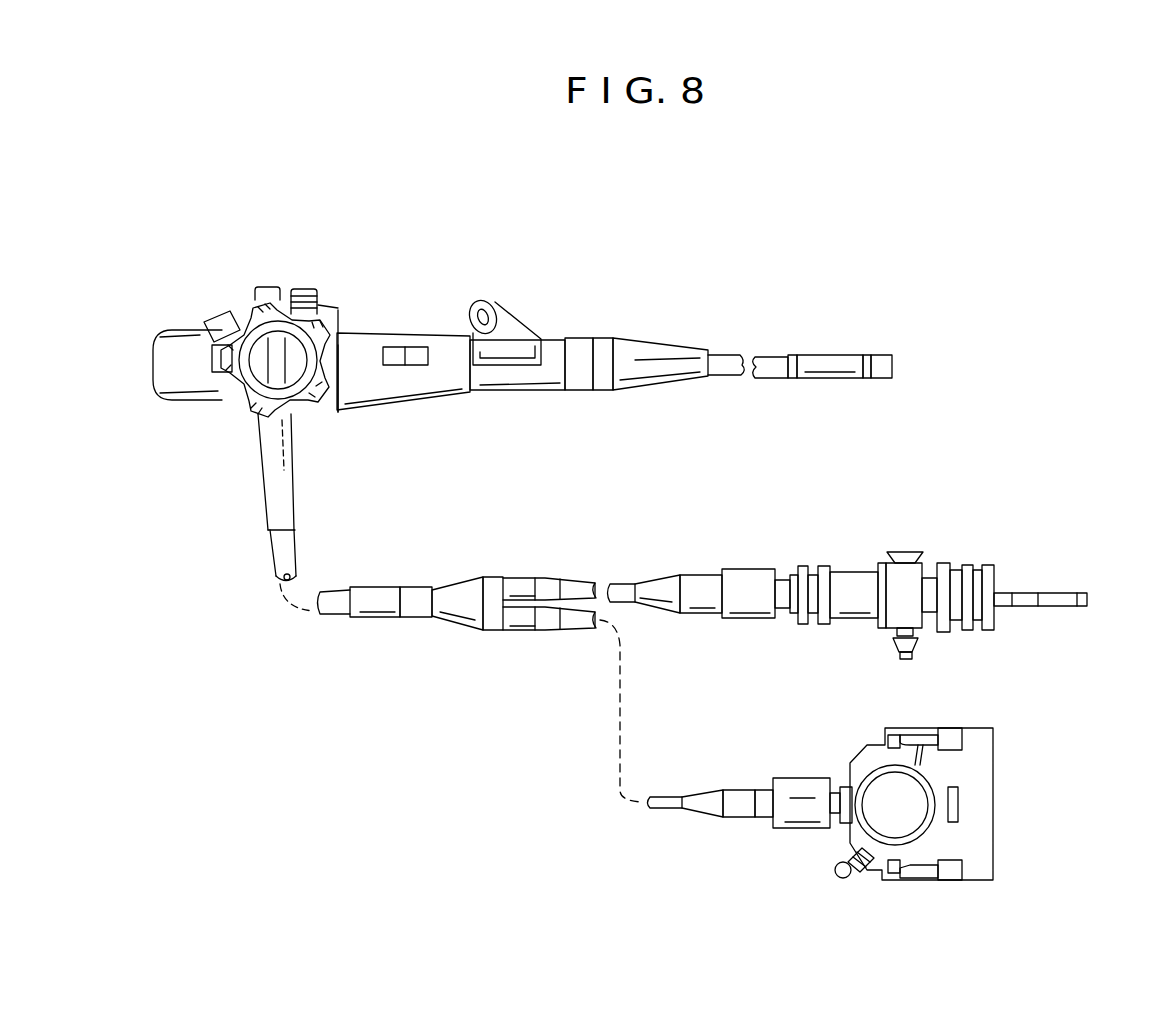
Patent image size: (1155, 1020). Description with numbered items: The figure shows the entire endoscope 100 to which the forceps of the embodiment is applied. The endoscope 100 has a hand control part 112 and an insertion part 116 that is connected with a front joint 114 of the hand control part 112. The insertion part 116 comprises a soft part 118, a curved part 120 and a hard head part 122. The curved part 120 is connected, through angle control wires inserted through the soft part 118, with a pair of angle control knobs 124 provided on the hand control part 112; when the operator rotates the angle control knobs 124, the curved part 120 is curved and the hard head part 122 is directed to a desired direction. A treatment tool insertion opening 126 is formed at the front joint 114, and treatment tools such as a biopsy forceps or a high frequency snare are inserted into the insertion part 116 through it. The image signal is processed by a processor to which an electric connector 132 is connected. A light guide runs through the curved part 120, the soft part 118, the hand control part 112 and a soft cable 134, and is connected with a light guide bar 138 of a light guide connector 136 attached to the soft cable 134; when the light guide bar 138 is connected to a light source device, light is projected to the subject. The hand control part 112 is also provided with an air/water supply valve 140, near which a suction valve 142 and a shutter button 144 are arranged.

The endoscope 100 is at (725, 204).
The hand control part 112 is at (408, 330).
The front joint 114 is at (545, 395).
The insertion part 116 is at (967, 297).
The soft part 118 is at (768, 362).
The curved part 120 is at (840, 358).
The hard head part 122 is at (888, 357).
The angle control knobs 124 is at (330, 320).
The treatment tool insertion opening 126 is at (478, 300).
The electric connector 132 is at (983, 728).
The soft cable 134 is at (294, 538).
The light guide connector 136 is at (966, 549).
The light guide bar 138 is at (1048, 592).
The air/water supply valve 140 is at (299, 288).
The suction valve 142 is at (262, 287).
The shutter button 144 is at (226, 316).